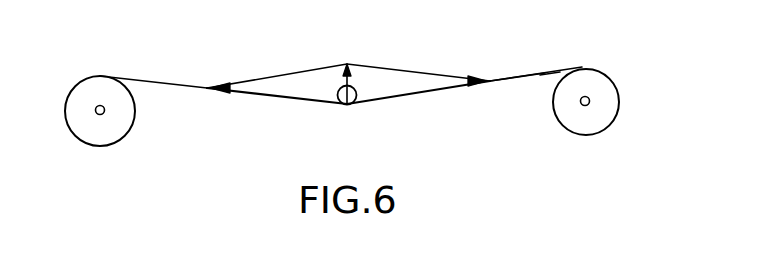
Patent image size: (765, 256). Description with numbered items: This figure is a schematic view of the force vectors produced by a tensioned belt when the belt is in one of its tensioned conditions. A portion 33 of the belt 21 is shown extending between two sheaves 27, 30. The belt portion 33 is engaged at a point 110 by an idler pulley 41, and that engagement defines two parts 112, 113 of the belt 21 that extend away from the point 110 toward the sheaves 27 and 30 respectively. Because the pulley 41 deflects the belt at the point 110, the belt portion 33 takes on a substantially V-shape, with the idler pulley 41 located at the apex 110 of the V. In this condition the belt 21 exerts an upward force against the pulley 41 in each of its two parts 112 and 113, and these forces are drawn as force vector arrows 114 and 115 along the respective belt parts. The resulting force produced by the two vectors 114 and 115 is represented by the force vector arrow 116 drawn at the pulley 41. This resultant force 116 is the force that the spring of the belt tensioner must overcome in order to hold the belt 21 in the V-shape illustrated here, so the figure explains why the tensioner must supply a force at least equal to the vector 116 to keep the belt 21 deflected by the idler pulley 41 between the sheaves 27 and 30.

The sheave 27 is at (91, 136).
The sheave 30 is at (615, 102).
The part of the belt 112 is at (155, 80).
The belt 21 is at (543, 73).
The portion of the belt 33 is at (507, 80).
The part of the belt 113 is at (525, 80).
The force vector arrow 114 is at (268, 96).
The force vector arrow 115 is at (442, 92).
The resulting force vector arrow 116 is at (350, 80).
The point 110 is at (344, 105).
The idler pulley 41 is at (357, 97).